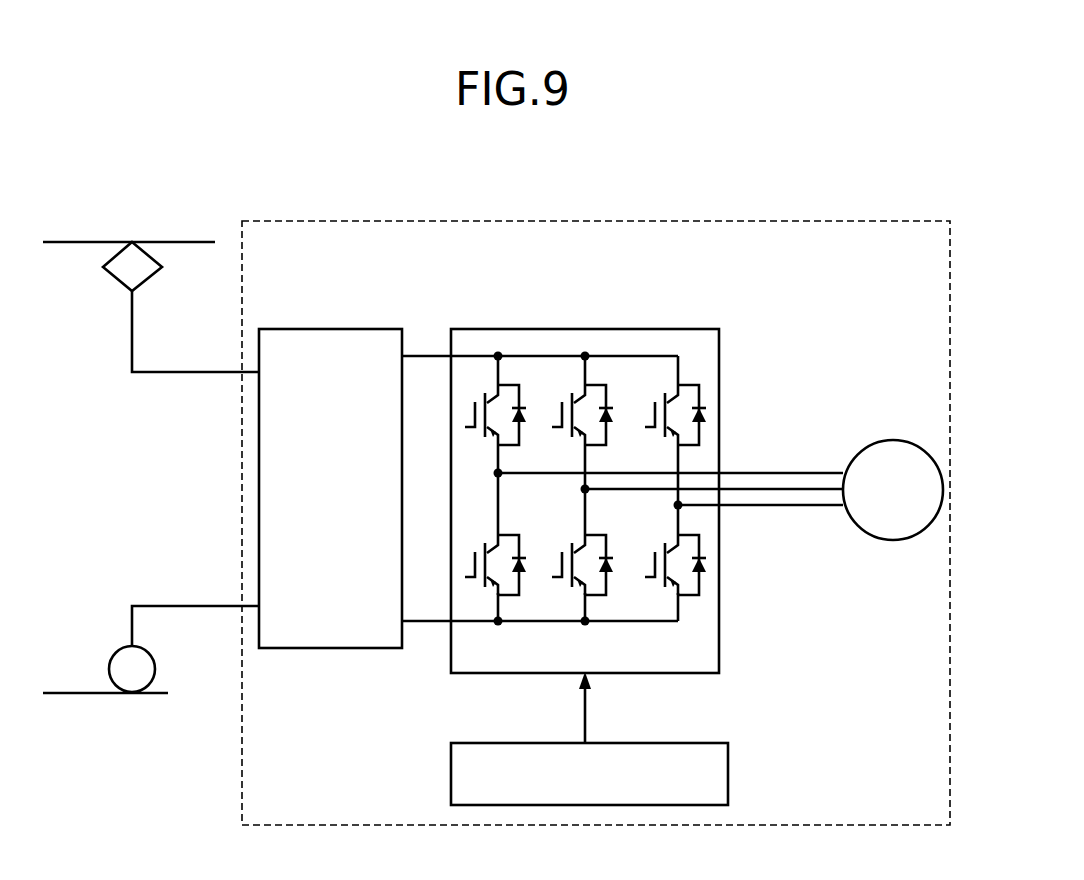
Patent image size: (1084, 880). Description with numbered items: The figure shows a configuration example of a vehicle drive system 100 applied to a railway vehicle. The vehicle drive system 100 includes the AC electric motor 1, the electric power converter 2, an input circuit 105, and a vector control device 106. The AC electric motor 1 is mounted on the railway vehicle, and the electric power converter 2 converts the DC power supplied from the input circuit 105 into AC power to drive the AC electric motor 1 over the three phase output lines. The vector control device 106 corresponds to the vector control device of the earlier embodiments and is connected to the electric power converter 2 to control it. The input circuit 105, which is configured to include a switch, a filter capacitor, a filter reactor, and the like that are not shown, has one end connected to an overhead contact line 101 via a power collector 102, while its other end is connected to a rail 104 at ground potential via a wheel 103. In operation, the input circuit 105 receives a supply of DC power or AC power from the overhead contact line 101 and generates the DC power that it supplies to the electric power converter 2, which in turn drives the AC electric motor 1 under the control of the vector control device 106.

The AC electric motor 1 is at (893, 540).
The electric power converter 2 is at (668, 329).
The vehicle drive system 100 is at (808, 221).
The overhead contact line 101 is at (65, 242).
The power collector 102 is at (113, 280).
The wheel 103 is at (117, 652).
The rail 104 is at (107, 693).
The input circuit 105 is at (332, 328).
The vector control device 106 is at (728, 773).